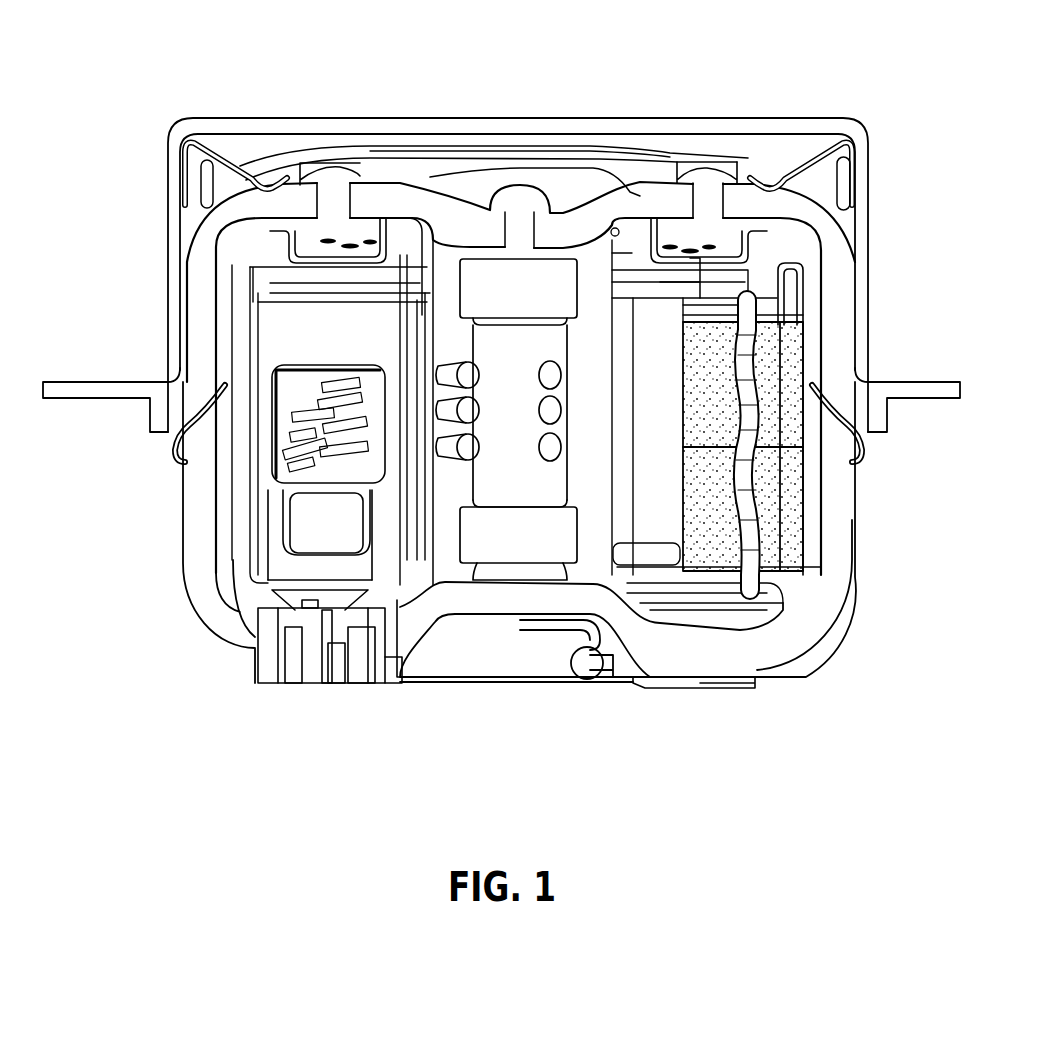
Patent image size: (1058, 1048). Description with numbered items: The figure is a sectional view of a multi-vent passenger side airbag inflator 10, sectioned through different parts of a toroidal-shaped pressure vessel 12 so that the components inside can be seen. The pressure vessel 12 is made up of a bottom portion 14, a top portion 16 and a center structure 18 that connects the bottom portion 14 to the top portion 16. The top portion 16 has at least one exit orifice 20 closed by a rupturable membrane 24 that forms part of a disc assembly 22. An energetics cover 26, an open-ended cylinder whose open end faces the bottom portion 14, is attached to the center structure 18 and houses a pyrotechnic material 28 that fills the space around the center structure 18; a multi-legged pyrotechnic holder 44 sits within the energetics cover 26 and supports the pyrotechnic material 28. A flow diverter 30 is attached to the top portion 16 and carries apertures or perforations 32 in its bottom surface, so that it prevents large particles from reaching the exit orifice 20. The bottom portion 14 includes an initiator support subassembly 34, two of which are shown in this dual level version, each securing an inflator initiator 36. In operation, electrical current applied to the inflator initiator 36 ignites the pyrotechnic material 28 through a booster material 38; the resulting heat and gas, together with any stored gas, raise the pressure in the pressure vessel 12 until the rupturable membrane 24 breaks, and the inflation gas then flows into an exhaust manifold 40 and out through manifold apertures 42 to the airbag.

The airbag inflator 10 is at (107, 108).
The pressure vessel 12 is at (131, 285).
The bottom portion 14 is at (185, 618).
The top portion 16 is at (196, 293).
The center structure 18 is at (440, 545).
The exit orifice 20 is at (328, 203).
The disc assembly 22 is at (395, 166).
The rupturable membrane 24 is at (818, 185).
The energetics cover 26 is at (810, 297).
The pyrotechnic material 28 is at (806, 531).
The flow diverter 30 is at (756, 237).
The apertures or perforations 32 is at (688, 263).
The initiator support subassembly 34 is at (396, 683).
The inflator initiator 36 is at (312, 670).
The booster material 38 is at (274, 437).
The exhaust manifold 40 is at (812, 125).
The manifold apertures 42 is at (847, 205).
The pyrotechnic holder 44 is at (767, 586).